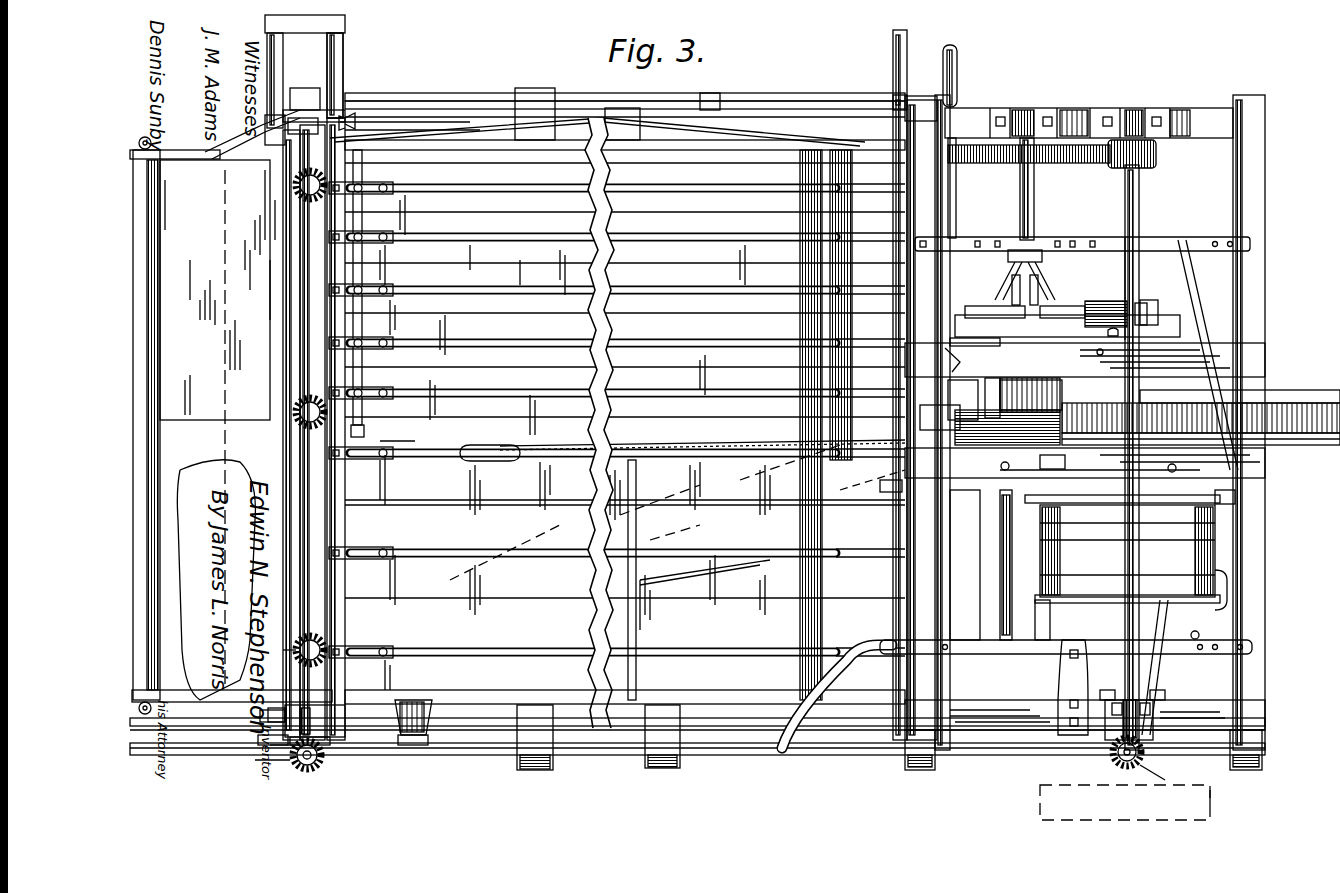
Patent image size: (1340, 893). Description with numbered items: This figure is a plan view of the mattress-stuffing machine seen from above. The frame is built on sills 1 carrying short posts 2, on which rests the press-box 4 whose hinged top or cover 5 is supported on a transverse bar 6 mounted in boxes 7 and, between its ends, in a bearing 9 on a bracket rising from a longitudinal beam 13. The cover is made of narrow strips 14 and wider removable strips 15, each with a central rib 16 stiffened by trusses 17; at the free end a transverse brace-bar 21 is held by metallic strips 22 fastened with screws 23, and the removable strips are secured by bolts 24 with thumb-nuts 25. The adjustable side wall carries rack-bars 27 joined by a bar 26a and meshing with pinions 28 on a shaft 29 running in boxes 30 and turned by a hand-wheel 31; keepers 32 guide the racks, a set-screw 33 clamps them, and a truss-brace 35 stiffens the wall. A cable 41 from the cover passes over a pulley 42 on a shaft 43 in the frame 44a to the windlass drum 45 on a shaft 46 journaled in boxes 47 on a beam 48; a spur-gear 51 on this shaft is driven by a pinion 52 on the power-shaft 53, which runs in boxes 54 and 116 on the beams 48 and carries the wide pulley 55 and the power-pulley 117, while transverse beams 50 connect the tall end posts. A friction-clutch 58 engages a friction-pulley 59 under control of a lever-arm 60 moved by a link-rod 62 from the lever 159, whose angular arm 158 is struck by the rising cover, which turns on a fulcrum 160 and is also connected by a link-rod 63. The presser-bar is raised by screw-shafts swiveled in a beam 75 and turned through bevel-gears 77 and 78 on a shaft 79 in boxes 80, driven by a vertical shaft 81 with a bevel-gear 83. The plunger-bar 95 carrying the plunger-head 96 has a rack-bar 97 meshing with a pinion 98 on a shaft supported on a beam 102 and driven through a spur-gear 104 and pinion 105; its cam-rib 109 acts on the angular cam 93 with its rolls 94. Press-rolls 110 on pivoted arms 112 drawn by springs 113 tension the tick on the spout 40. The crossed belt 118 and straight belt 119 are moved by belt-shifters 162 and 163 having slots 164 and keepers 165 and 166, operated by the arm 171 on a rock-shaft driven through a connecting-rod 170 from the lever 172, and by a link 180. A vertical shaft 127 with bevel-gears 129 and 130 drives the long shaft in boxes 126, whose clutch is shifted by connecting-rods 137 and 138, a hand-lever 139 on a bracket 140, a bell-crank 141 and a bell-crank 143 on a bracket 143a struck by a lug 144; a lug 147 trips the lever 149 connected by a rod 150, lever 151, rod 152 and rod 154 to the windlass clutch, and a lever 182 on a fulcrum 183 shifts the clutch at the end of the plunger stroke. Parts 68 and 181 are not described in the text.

The sills 1 is at (480, 728).
The uprights or short vertical posts 2 is at (545, 112).
The press-box 4 is at (625, 93).
The top or cover 5 is at (625, 380).
The transverse bar 6 is at (892, 163).
The boxes 7 is at (892, 118).
The bearing 9 is at (872, 474).
The longitudinal beam 13 is at (176, 160).
The longitudinal strips 14 is at (575, 447).
The strips 15 is at (627, 420).
The central longitudinal rib 16 is at (690, 510).
The trusses 17 is at (696, 392).
The transverse brace-bar 21 is at (372, 620).
The metallic strips 22 is at (365, 448).
The screws 23 is at (395, 452).
The bolts 24 is at (378, 232).
The thumb-nuts 25 is at (378, 290).
The bar 26a is at (305, 71).
The rack-bar 27 is at (320, 95).
The pinion 28 is at (315, 92).
The shaft 29 is at (625, 86).
The boxes 30 is at (920, 85).
The hand-wheel 31 is at (963, 76).
The keepers 32 is at (379, 293).
The set-screw 33 is at (358, 124).
The truss-brace 35 is at (505, 135).
The spout 40 is at (216, 297).
The cable 41 is at (738, 448).
The roll or pulley 42 is at (990, 425).
The shaft 43 is at (995, 378).
The frame 44a is at (975, 366).
The drum 45 is at (1025, 442).
The shaft 46 is at (1032, 222).
The boxes 47 is at (1022, 115).
The horizontal beam 48 is at (1083, 113).
The horizontal beams 50 is at (1099, 422).
The large spur-gear 51 is at (1004, 165).
The small pinion 52 is at (1150, 160).
The power-shaft 53 is at (1125, 280).
The boxes 54 is at (1135, 116).
The wide pulley 55 is at (1127, 551).
The friction-clutch 58 is at (1039, 277).
The friction-pulley 59 is at (958, 338).
The lever-arm 60 is at (1082, 235).
The link-rod 62 is at (1205, 268).
The link-rod 63 is at (950, 180).
The pin 68 is at (1103, 352).
The horizontal transverse beam 75 is at (262, 245).
The bevel-gears 77 is at (300, 430).
The bevel-gears 78 is at (295, 402).
The shaft 79 is at (300, 505).
The boxes 80 is at (300, 185).
The vertical shaft 81 is at (312, 770).
The beveled gear 83 is at (320, 765).
The angular cam 93 is at (955, 330).
The antifriction-rolls 94 is at (940, 360).
The plunger-bar 95 is at (1265, 395).
The plunger-head 96 is at (997, 472).
The rack-bar 97 is at (1280, 447).
The pinion 98 is at (1055, 405).
The horizontal beam 102 is at (1175, 458).
The large spur-gear 104 is at (1100, 314).
The pinion 105 is at (1160, 304).
The cam-rib 109 is at (1240, 373).
The press-rolls 110 is at (158, 238).
The pivoted arms 112 is at (192, 432).
The springs 113 is at (228, 710).
The box 116 is at (1115, 722).
The power-pulley 117 is at (1212, 802).
The crossed belt 118 is at (1127, 527).
The straight belt 119 is at (1127, 582).
The boxes 126 is at (650, 760).
The vertical shaft 127 is at (1125, 768).
The bevel-gear 129 is at (1145, 768).
The bevel-gear 130 is at (1110, 765).
The connecting-rod 137 is at (488, 742).
The connecting-rod 138 is at (292, 772).
The hand-lever 139 is at (430, 735).
The depending bracket 140 is at (417, 710).
The bell-crank 141 is at (277, 761).
The bell-crank 143 is at (306, 721).
The bracket 143a is at (268, 760).
The lug 144 is at (273, 654).
The lug 147 is at (290, 122).
The straight lever 149 is at (270, 140).
The rod 150 is at (225, 155).
The straight lever 151 is at (355, 118).
The vertical rod 152 is at (365, 126).
The rod 154 is at (708, 100).
The angular arm 158 is at (780, 752).
The lever 159 is at (1040, 605).
The fulcrum 160 is at (1078, 655).
The belt-shifter 162 is at (1048, 638).
The belt-shifter 163 is at (1176, 618).
The elongated slot 164 is at (1035, 602).
The loop or keeper 165 is at (1047, 512).
The loop or keeper 166 is at (1205, 605).
The connecting-rod 170 is at (870, 485).
The arm 171 is at (972, 500).
The lever 172 is at (262, 712).
The link 180 is at (1220, 496).
The housing 181 is at (1107, 707).
The lever 182 is at (1142, 692).
The fulcrum 183 is at (1156, 694).